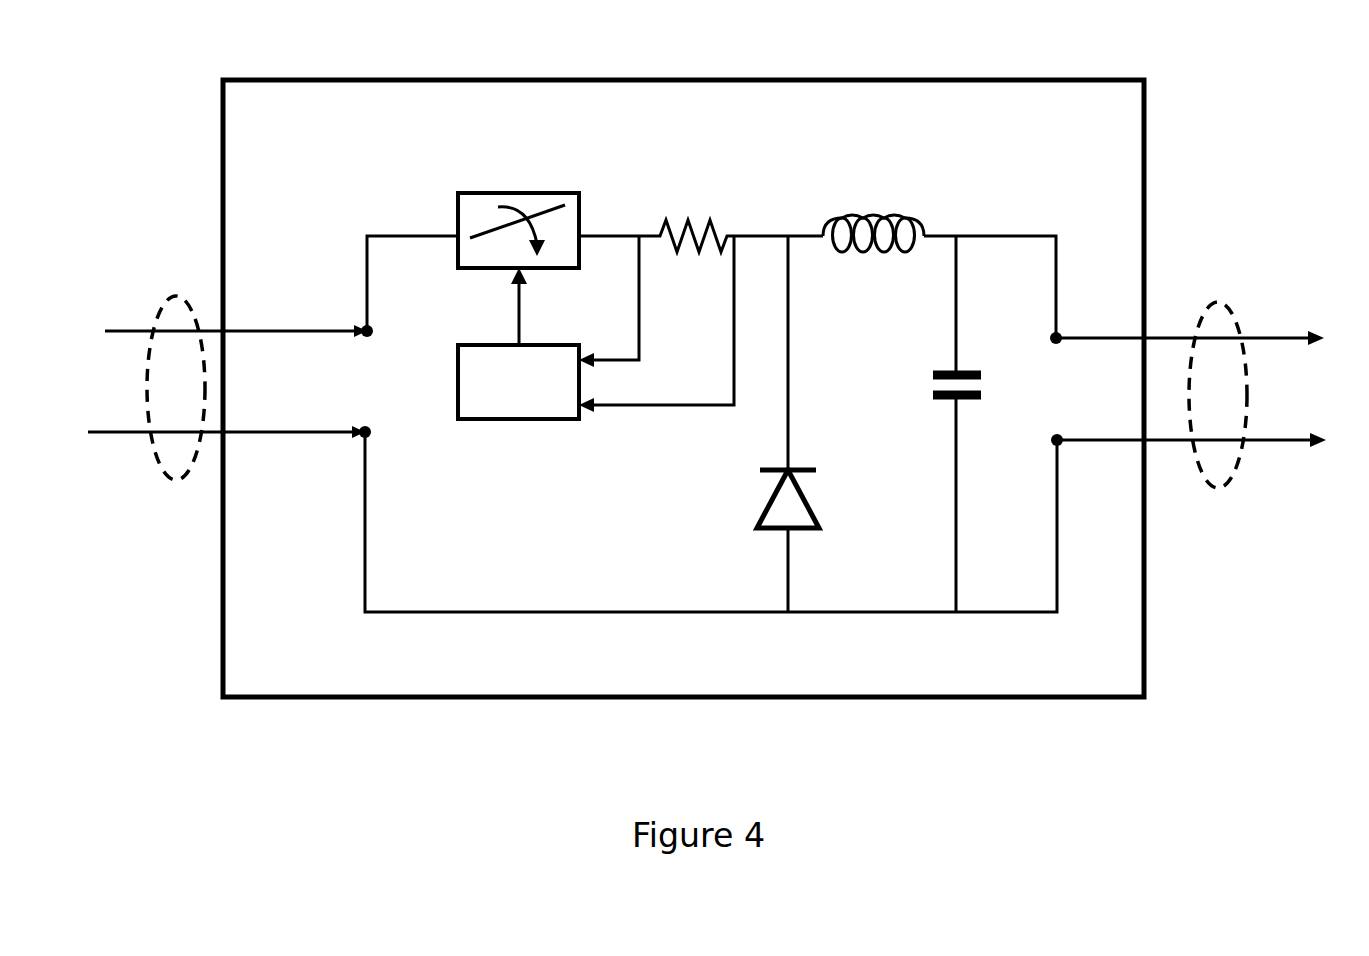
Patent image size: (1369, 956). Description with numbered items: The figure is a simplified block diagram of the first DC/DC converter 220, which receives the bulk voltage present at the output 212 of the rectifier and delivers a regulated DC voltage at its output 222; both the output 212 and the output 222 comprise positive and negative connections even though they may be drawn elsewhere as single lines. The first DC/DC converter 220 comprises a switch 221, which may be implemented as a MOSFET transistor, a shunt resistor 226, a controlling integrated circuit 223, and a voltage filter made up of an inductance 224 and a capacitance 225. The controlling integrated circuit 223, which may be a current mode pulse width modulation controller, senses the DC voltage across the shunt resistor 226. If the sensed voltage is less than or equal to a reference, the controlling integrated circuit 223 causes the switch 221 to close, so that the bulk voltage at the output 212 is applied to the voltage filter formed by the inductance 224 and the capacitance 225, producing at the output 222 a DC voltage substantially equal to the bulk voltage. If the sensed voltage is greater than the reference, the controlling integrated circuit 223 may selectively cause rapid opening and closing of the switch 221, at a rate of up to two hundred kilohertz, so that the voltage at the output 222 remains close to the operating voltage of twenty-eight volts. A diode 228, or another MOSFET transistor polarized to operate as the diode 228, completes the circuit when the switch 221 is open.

The output of the rectifier 212 is at (190, 306).
The first DC/DC converter 220 is at (875, 80).
The switch 221 is at (470, 193).
The output of the first DC/DC converter 222 is at (1217, 303).
The controlling integrated circuit 223 is at (487, 419).
The inductance 224 is at (840, 257).
The capacitance 225 is at (987, 377).
The shunt resistor 226 is at (693, 218).
The diode 228 is at (762, 505).